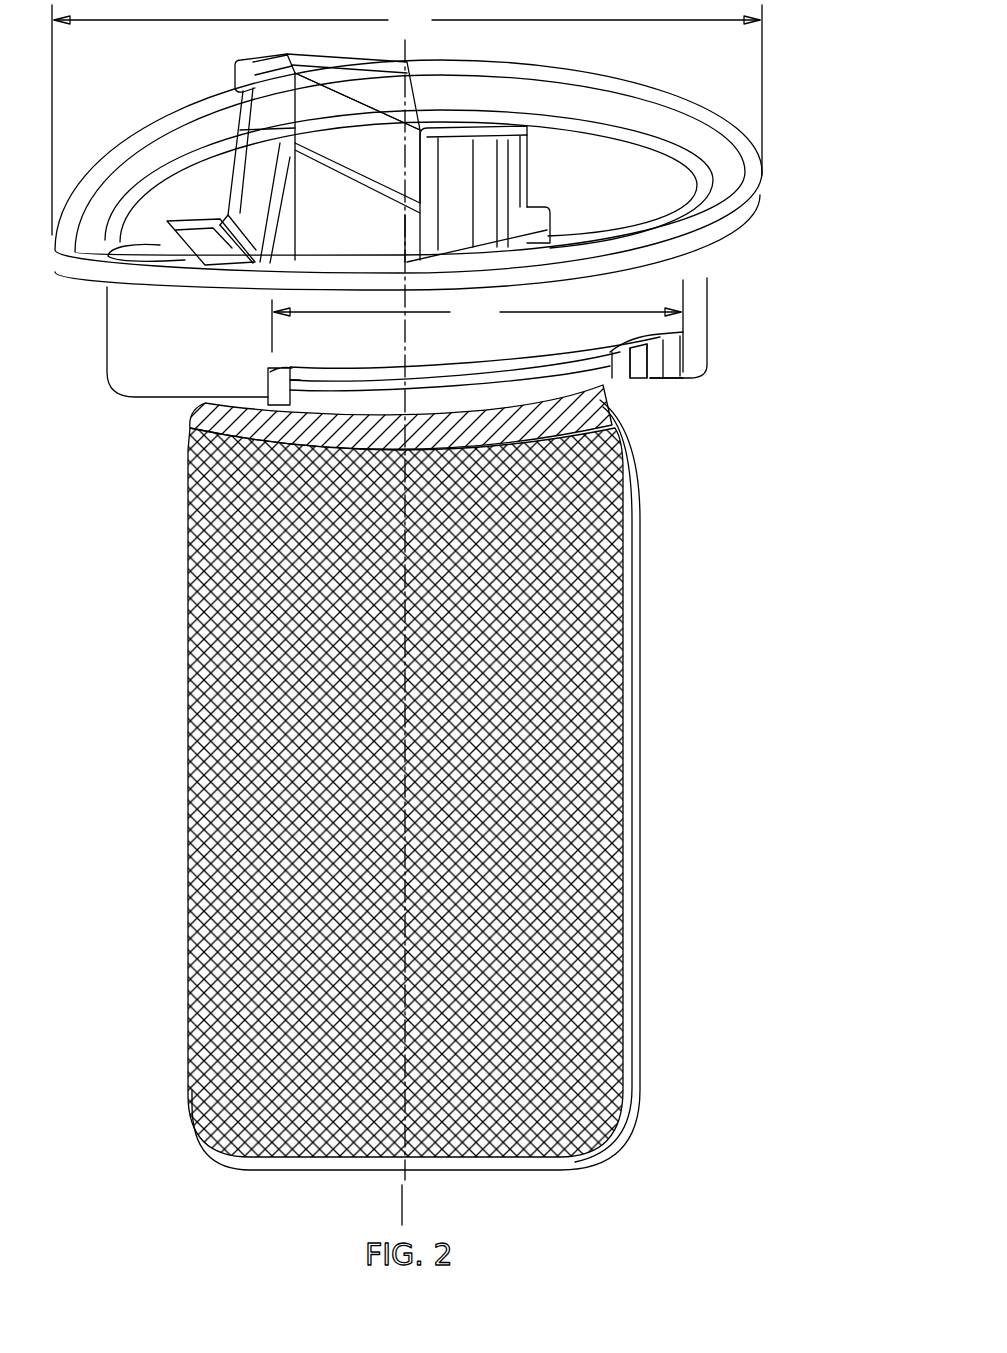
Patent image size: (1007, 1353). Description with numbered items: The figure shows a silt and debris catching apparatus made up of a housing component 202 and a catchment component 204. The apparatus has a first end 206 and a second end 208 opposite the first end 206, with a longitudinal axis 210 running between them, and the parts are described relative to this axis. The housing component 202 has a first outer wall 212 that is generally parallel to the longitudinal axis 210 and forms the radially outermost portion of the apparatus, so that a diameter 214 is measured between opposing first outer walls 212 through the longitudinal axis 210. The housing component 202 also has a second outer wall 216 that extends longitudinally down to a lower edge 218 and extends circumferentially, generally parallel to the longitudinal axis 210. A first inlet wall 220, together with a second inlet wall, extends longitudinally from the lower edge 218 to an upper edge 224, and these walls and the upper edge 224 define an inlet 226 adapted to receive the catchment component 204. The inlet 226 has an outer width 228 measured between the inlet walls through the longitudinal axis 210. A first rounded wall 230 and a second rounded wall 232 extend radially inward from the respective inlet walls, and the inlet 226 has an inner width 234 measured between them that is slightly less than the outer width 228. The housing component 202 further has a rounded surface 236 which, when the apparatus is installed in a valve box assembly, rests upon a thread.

The housing component 202 is at (745, 281).
The catchment component 204 is at (694, 680).
The first end 206 is at (806, 94).
The second end 208 is at (660, 1183).
The longitudinal axis 210 is at (404, 1200).
The first outer wall 212 is at (770, 185).
The diameter 214 is at (407, 118).
The second outer wall 216 is at (190, 343).
The lower edge 218 is at (695, 378).
The first inlet wall 220 is at (268, 384).
The upper edge 224 is at (525, 368).
The inlet 226 is at (665, 333).
The outer width 228 is at (476, 324).
The first rounded wall 230 is at (357, 372).
The second rounded wall 232 is at (672, 380).
The inner width 234 is at (400, 388).
The rounded surface 236 is at (84, 284).